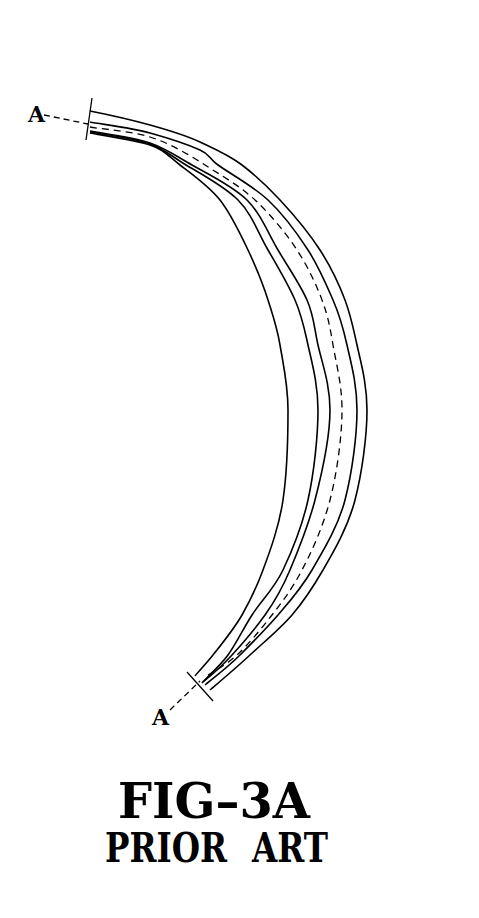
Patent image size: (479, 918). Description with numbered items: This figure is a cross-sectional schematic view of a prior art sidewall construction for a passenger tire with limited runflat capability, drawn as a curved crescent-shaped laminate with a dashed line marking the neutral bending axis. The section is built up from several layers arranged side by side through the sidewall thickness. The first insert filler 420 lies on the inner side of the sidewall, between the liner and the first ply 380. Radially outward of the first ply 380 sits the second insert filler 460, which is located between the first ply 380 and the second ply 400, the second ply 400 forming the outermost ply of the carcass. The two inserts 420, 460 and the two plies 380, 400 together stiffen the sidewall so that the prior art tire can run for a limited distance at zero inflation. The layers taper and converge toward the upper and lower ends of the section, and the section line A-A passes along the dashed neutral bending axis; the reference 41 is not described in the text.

The second ply 400 is at (291, 208).
The second insert filler 460 is at (348, 357).
The glass sheets 41 is at (283, 280).
The first ply 380 is at (253, 226).
The first insert filler 420 is at (297, 356).